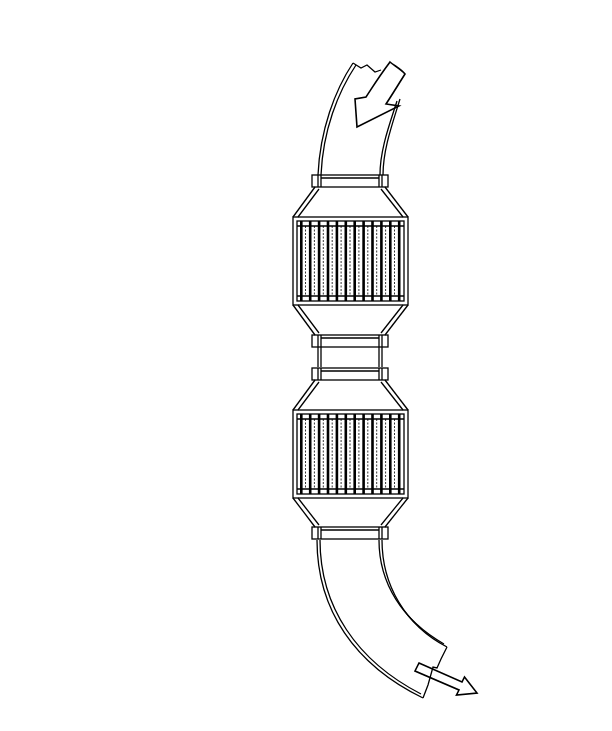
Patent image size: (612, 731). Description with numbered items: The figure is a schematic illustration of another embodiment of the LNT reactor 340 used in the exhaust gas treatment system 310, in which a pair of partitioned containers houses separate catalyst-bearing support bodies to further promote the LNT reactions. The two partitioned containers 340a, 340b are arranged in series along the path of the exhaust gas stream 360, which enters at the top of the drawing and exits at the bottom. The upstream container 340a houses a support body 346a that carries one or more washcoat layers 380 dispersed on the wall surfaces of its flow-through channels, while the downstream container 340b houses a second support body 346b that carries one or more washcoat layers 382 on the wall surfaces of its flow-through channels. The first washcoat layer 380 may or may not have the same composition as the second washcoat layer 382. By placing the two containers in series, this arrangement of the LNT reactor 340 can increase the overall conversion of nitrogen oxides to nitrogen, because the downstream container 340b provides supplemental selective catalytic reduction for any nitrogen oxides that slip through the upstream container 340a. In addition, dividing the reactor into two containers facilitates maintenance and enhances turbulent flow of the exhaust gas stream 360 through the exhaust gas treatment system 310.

The exhaust gas treatment system 310 is at (165, 117).
The exhaust gas stream 360 is at (363, 92).
The LNT reactor 340 is at (245, 548).
The upstream container 340a is at (310, 196).
The support body 346a is at (300, 255).
The first washcoat layer 380 is at (382, 242).
The support body 346b is at (300, 447).
The second washcoat layer 382 is at (382, 452).
The downstream container 340b is at (313, 513).